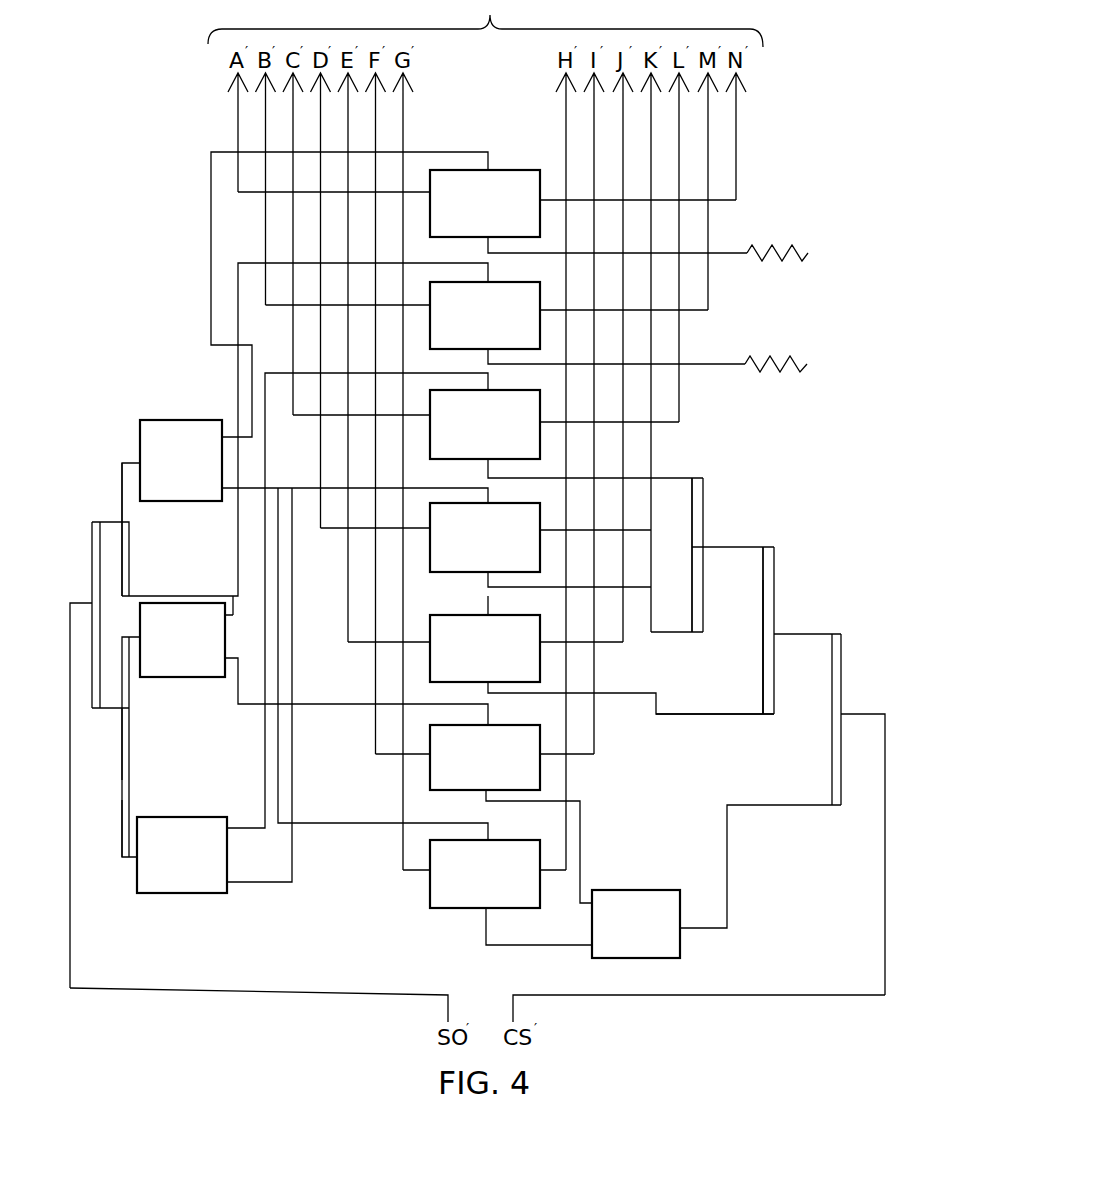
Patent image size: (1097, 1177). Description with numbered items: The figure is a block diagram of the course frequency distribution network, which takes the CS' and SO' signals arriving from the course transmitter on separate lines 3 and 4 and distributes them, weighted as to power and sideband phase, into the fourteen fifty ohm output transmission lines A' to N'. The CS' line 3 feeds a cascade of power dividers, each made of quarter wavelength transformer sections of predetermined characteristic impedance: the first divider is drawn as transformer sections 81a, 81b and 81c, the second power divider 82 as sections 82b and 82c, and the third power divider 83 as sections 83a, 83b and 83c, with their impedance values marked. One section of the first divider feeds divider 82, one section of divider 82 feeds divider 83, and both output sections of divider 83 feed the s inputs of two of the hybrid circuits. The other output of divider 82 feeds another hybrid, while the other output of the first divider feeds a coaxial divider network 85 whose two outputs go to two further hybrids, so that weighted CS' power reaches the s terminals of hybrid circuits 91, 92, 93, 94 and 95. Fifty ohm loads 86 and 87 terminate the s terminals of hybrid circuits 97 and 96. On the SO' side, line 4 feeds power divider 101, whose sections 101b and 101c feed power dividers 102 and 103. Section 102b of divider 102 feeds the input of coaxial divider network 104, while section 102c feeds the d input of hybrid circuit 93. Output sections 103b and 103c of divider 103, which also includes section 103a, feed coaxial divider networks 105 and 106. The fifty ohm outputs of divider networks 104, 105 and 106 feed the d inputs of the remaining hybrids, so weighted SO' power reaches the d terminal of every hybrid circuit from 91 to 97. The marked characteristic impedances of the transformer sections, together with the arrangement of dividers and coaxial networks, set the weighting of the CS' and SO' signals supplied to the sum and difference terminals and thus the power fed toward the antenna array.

The hybrid circuit 97 is at (497, 170).
The hybrid circuit 96 is at (500, 282).
The hybrid circuit 95 is at (500, 390).
The hybrid circuit 94 is at (497, 503).
The hybrid circuit 93 is at (503, 615).
The hybrid circuit 92 is at (497, 725).
The hybrid circuit 91 is at (490, 840).
The fifty ohm load 86 is at (771, 252).
The fifty ohm load 87 is at (775, 365).
The power divider 83 is at (692, 547).
The transformer section of power divider 83 83a is at (762, 547).
The transformer section of power divider 83 83b is at (709, 481).
The transformer section of power divider 83 83c is at (762, 602).
The power divider 82 is at (762, 633).
The transformer section of power divider 82 82b is at (776, 579).
The transformer section of power divider 82 82c is at (773, 712).
The transformer section of power divider 81 81a is at (876, 718).
The transformer section of power divider 81 81b is at (843, 660).
The transformer section of power divider 81 81c is at (842, 800).
The coaxial divider network 85 is at (636, 890).
The coaxial divider network 104 is at (145, 420).
The coaxial divider network 105 is at (210, 677).
The coaxial divider network 106 is at (199, 870).
The power divider 101 is at (92, 600).
The transformer section of power divider 101 101b is at (92, 540).
The transformer section of power divider 101 101c is at (100, 700).
The power divider 102 is at (133, 523).
The output section of divider 102 102b is at (122, 465).
The output section of divider 102 102c is at (132, 570).
The power divider 103 is at (110, 745).
The transformer section of power divider 103 103a is at (118, 712).
The output section of divider 103 103b is at (130, 797).
The output section of divider 103 103c is at (118, 840).
The line 4 is at (272, 993).
The line 3 is at (766, 995).